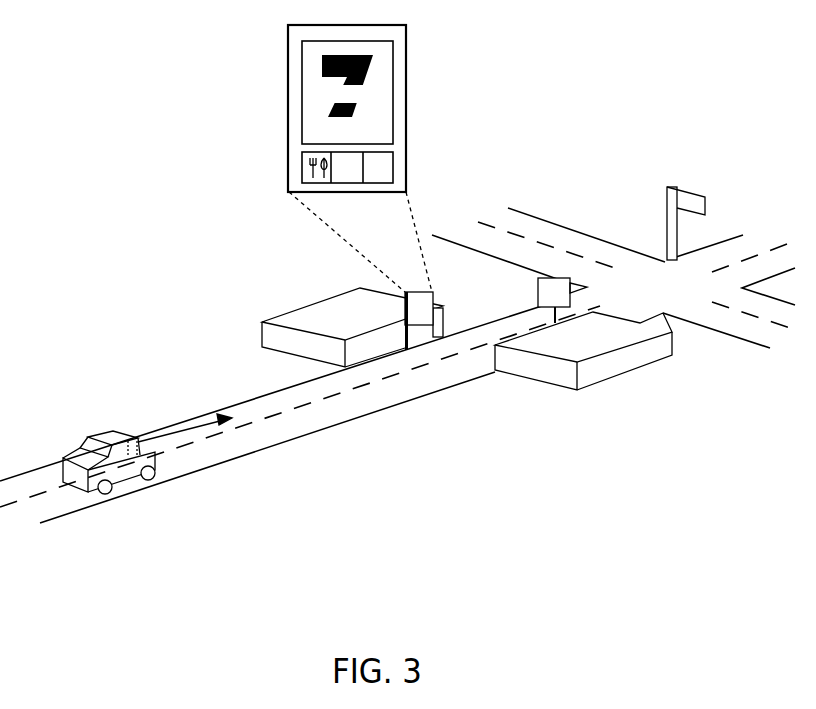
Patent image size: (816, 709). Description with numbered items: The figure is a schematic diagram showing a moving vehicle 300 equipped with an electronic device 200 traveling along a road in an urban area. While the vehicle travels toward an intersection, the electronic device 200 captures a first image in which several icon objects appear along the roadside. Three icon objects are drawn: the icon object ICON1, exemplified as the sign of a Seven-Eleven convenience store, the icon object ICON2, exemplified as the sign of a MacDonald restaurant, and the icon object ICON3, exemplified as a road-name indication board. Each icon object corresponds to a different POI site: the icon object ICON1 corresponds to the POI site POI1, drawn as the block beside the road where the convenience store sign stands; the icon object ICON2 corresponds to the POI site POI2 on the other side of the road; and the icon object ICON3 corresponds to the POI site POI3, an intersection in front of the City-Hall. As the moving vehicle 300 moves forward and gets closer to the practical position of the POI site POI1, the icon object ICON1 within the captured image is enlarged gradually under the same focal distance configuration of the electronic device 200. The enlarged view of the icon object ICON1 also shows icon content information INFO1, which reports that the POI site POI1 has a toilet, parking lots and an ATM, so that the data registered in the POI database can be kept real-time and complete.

The icon object ICON1 is at (407, 80).
The icon content information INFO1 is at (302, 165).
The POI site POI1 is at (343, 318).
The POI site POI2 is at (585, 338).
The POI site POI3 is at (663, 237).
The icon object ICON2 is at (572, 300).
The icon object ICON3 is at (690, 191).
The electronic device 200 is at (132, 450).
The moving vehicle 300 is at (97, 433).